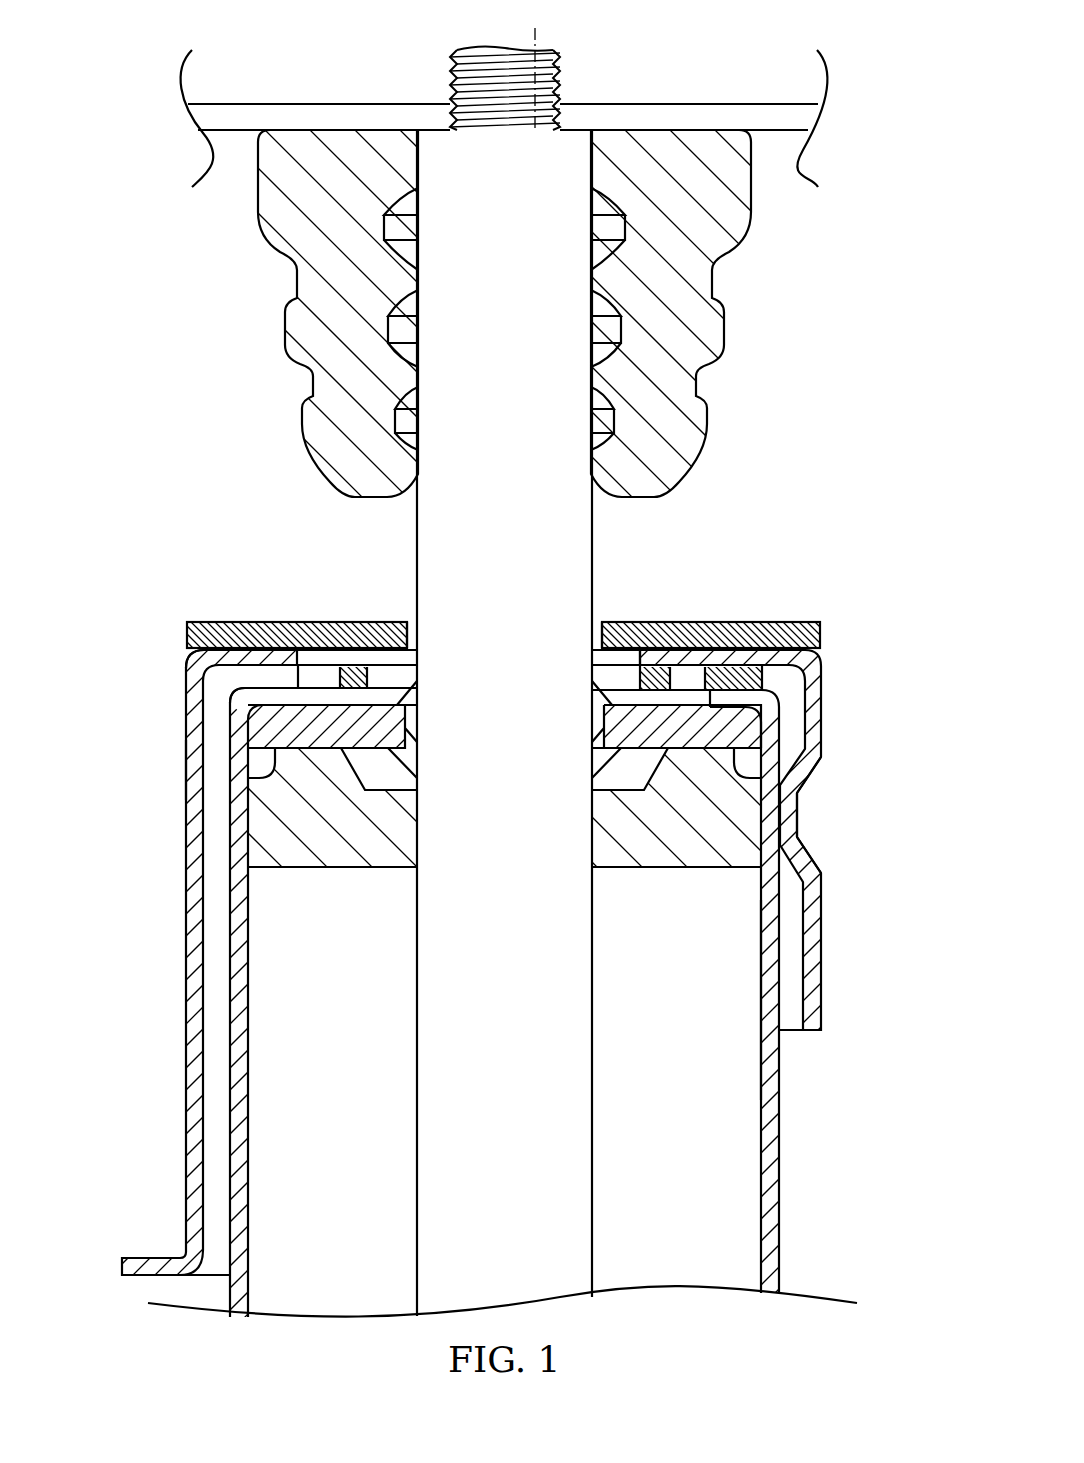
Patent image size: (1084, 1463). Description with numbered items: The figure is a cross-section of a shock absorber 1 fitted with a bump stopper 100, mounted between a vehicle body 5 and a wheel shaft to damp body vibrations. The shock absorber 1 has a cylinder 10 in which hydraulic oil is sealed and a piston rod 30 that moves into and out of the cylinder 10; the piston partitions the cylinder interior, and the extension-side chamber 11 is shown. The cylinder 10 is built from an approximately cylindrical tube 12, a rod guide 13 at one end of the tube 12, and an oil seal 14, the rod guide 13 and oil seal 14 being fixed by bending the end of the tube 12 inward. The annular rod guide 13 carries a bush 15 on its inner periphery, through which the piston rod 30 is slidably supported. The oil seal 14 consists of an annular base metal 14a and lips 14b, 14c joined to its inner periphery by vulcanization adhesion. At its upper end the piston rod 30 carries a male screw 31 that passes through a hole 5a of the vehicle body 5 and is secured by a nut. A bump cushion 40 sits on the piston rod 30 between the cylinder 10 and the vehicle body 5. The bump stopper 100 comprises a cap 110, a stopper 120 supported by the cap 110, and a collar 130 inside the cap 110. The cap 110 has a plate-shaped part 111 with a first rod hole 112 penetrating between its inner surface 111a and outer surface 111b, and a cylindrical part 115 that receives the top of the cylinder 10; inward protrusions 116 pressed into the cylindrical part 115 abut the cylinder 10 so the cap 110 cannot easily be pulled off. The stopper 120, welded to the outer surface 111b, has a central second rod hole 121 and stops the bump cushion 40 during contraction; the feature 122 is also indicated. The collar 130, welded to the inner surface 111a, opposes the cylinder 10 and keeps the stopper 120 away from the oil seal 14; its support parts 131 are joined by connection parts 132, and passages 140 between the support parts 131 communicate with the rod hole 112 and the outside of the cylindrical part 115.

The shock absorber 1 is at (830, 240).
The vehicle body 5 is at (677, 120).
The hole 5a is at (535, 66).
The male screw 31 is at (452, 97).
The piston rod 30 is at (555, 1245).
The bump cushion 40 is at (668, 268).
The bump stopper 100 is at (150, 592).
The cap 110 is at (186, 1000).
The plate-shaped part 111 is at (256, 660).
The first surface (inner surface) 111a is at (240, 650).
The second surface (outer surface) 111b is at (258, 650).
The first rod hole 112 is at (318, 650).
The cylindrical part 115 is at (192, 766).
The protrusions 116 is at (796, 815).
The stopper 120 is at (287, 635).
The second rod hole 121 is at (603, 625).
The plate inner edge 122 is at (403, 622).
The collar 130 is at (808, 652).
The support parts 131 is at (718, 677).
The connection parts 132 is at (357, 680).
The passages 140 is at (285, 705).
The cylinder 10 is at (783, 1252).
The extension-side chamber 11 is at (722, 1167).
The tube 12 is at (770, 1112).
The rod guide 13 is at (600, 852).
The oil seal 14 is at (752, 758).
The base metal 14a is at (770, 677).
The lip 14b is at (633, 722).
The lip 14c is at (604, 700).
The bush 15 is at (723, 853).